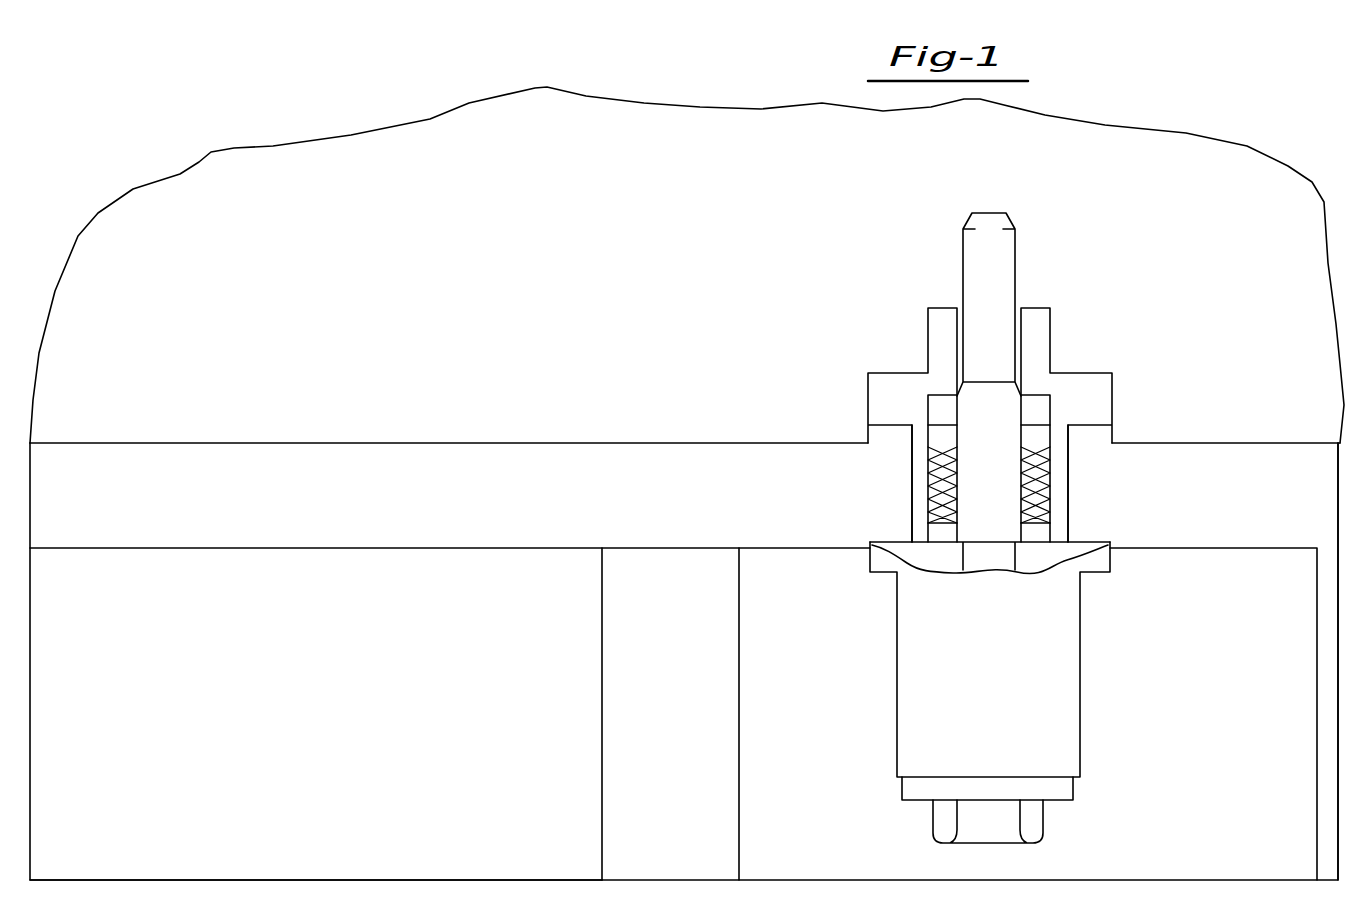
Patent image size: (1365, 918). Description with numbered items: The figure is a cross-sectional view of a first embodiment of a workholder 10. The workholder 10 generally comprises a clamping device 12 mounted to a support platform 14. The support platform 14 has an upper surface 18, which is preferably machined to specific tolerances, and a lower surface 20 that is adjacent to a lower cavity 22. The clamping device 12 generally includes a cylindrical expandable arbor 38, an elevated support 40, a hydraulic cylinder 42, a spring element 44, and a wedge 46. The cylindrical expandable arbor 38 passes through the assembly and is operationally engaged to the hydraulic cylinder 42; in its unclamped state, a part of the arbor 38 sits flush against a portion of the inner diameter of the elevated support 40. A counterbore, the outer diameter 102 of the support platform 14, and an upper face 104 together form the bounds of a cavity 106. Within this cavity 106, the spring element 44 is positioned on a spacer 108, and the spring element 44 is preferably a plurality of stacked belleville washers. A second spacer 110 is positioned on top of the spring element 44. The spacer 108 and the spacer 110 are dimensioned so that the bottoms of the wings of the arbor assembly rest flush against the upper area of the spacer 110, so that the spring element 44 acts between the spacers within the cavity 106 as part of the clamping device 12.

The workholder 10 is at (566, 331).
The clamping device 12 is at (991, 528).
The support platform 14 is at (685, 629).
The upper surface 18 is at (519, 443).
The lower surface 20 is at (445, 550).
The lower cavity 22 is at (388, 747).
The cylindrical expandable arbor 38 is at (998, 302).
The elevated support 40 is at (945, 334).
The hydraulic cylinder 42 is at (1060, 677).
The spring element 44 is at (1040, 462).
The wedge 46 is at (1038, 411).
The outer diameter of support platform 102 is at (908, 528).
The upper face 104 is at (937, 545).
The cavity 106 is at (922, 455).
The spacer 108 is at (1037, 532).
The spacer 110 is at (1038, 439).